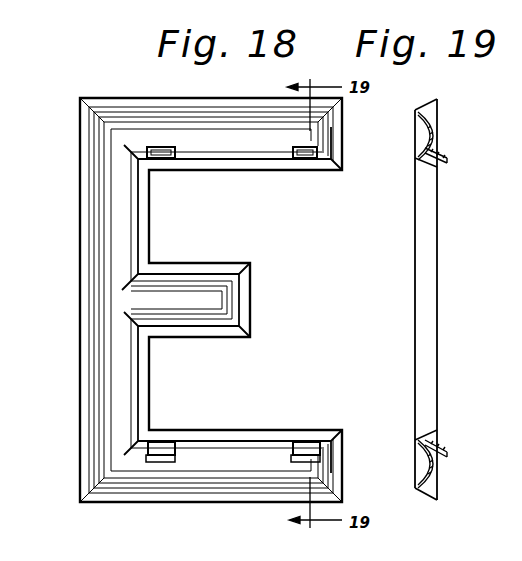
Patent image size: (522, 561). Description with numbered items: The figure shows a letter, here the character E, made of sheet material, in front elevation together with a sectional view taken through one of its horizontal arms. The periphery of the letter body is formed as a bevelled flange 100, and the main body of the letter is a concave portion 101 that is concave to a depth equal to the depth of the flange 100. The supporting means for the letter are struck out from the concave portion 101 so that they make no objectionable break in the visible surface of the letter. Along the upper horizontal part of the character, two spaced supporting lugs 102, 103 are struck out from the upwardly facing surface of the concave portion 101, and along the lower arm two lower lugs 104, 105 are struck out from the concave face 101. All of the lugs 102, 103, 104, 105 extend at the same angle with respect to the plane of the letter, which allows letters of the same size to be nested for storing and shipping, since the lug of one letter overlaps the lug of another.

In FIG. 18, the bevelled flange 100 is at (80, 232).
In FIG. 19, the bevelled flange 100 is at (429, 223).
In FIG. 18, the concave portion 101 is at (104, 373).
In FIG. 19, the concave portion 101 is at (421, 132).
In FIG. 18, the supporting lug 102 is at (305, 153).
In FIG. 19, the supporting lug 102 is at (438, 148).
In FIG. 18, the supporting lug 103 is at (161, 153).
In FIG. 18, the lower lug 104 is at (308, 444).
In FIG. 19, the lower lug 104 is at (444, 443).
In FIG. 18, the lower lug 105 is at (162, 443).